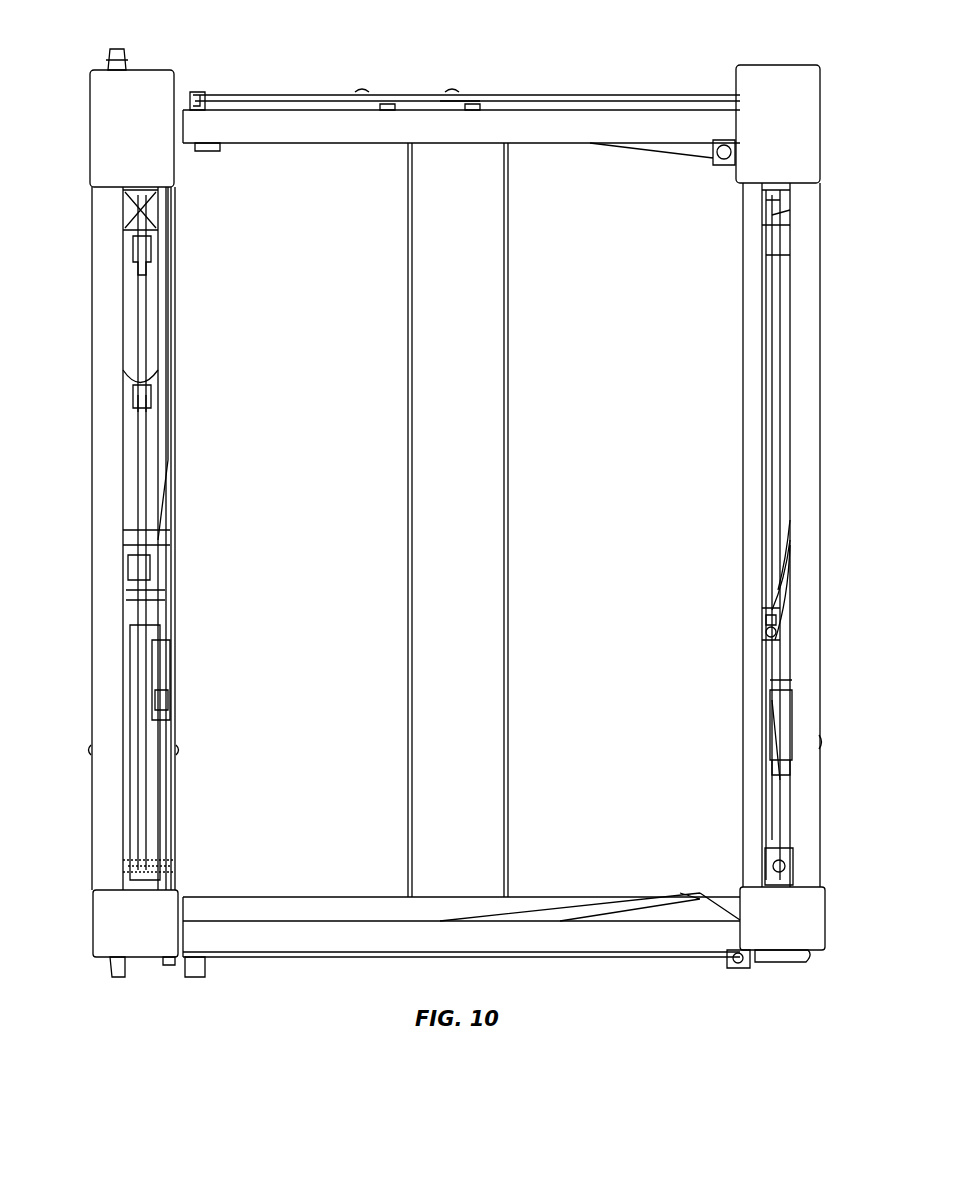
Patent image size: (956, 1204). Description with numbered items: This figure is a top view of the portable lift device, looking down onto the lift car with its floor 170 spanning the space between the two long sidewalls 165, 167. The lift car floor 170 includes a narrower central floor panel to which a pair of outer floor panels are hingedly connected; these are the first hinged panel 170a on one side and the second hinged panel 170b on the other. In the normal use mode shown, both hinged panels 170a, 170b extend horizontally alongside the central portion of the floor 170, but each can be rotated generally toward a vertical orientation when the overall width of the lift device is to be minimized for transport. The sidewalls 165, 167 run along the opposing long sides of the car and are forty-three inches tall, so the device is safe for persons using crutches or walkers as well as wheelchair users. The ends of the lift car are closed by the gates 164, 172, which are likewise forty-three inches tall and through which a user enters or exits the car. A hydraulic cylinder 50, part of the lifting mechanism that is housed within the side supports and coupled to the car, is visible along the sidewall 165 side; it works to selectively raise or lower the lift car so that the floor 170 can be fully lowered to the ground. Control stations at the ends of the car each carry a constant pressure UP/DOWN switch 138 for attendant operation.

The constant pressure UP/DOWN switch 138 is at (118, 46).
The gate 172 is at (558, 122).
The sidewall 167 is at (110, 467).
The sidewall 165 is at (805, 447).
The hydraulic cylinder 50 is at (773, 578).
The lift car floor 170 is at (458, 520).
The first hinged panel 170a is at (293, 522).
The second hinged panel 170b is at (626, 522).
The gate 164 is at (532, 953).